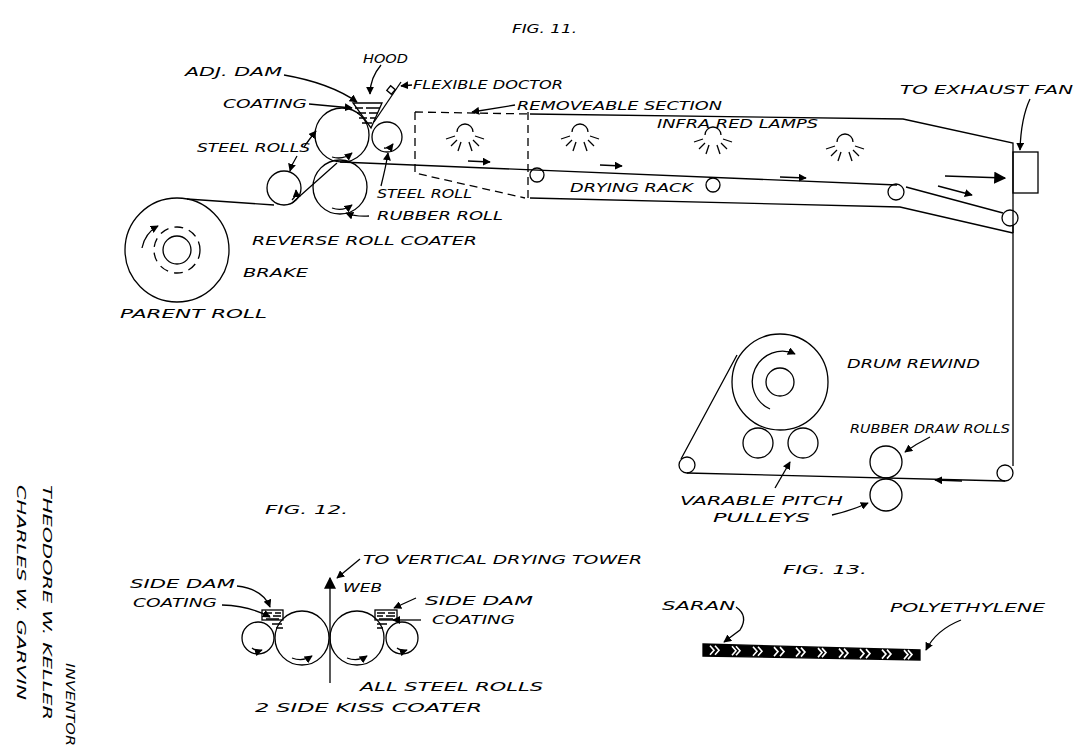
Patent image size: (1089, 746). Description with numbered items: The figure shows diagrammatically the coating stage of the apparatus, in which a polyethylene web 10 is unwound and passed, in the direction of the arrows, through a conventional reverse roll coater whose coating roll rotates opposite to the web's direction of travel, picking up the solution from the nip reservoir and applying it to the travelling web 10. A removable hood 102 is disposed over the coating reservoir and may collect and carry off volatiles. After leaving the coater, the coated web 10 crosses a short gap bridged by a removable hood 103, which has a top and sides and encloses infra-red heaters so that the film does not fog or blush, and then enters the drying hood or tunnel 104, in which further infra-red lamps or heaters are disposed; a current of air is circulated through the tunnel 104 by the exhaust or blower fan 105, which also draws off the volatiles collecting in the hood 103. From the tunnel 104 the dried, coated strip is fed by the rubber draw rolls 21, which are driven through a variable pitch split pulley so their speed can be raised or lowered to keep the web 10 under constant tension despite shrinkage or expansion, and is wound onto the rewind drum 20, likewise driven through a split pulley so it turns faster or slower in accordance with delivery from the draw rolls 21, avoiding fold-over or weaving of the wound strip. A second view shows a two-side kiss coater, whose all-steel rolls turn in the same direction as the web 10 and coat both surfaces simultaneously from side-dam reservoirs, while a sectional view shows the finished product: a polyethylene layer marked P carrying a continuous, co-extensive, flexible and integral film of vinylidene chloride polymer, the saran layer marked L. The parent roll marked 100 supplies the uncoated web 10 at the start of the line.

In FIG. 11, the web 10 is at (254, 186).
In FIG. 12, the web 10 is at (321, 671).
In FIG. 11, the parent roll 100 is at (134, 287).
In FIG. 11, the removable hood 102 is at (362, 99).
In FIG. 11, the removable hood 103 is at (472, 155).
In FIG. 11, the drying hood or tunnel 104 is at (951, 166).
In FIG. 11, the exhaust fan 105 is at (1029, 151).
In FIG. 11, the rewind drum 20 is at (800, 349).
In FIG. 11, the draw rolls 21 is at (893, 508).
In FIG. 13, the saran layer L is at (859, 633).
In FIG. 13, the polyethylene layer P is at (838, 660).